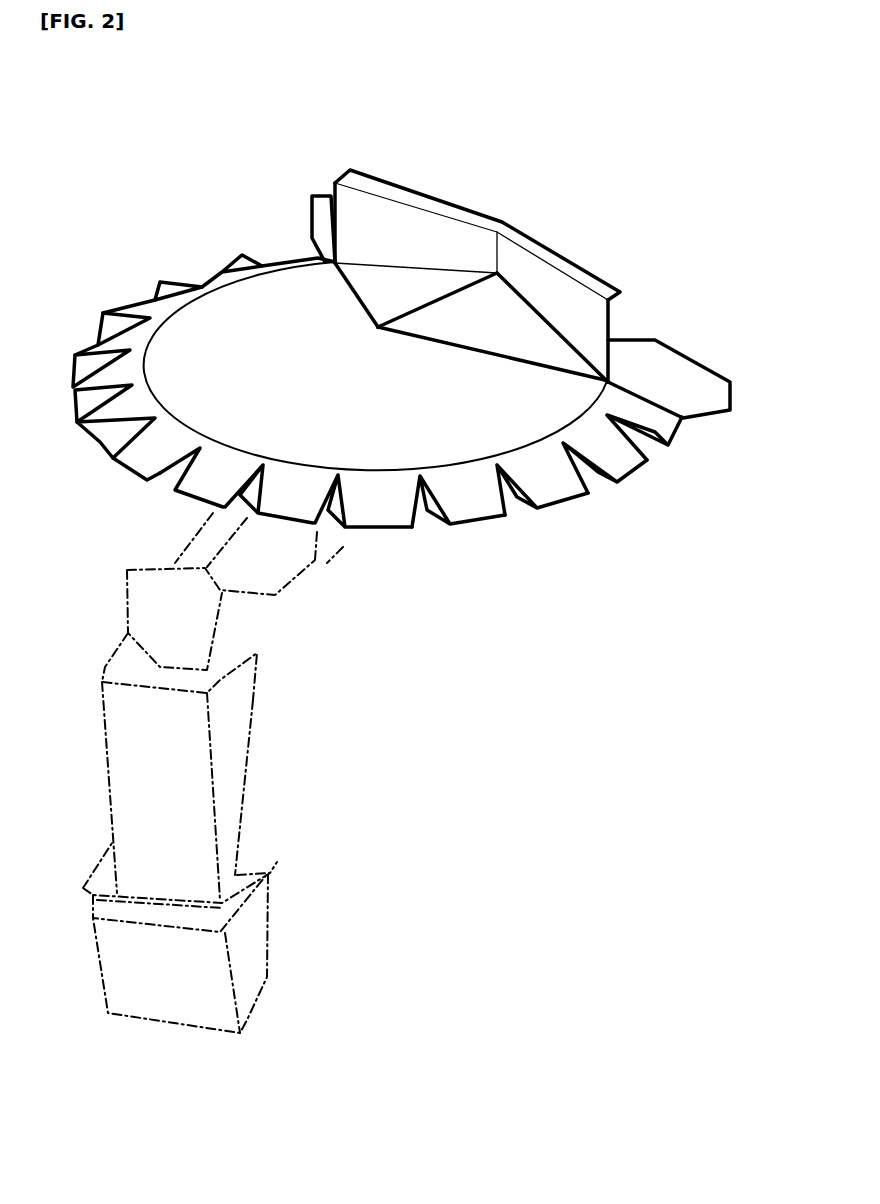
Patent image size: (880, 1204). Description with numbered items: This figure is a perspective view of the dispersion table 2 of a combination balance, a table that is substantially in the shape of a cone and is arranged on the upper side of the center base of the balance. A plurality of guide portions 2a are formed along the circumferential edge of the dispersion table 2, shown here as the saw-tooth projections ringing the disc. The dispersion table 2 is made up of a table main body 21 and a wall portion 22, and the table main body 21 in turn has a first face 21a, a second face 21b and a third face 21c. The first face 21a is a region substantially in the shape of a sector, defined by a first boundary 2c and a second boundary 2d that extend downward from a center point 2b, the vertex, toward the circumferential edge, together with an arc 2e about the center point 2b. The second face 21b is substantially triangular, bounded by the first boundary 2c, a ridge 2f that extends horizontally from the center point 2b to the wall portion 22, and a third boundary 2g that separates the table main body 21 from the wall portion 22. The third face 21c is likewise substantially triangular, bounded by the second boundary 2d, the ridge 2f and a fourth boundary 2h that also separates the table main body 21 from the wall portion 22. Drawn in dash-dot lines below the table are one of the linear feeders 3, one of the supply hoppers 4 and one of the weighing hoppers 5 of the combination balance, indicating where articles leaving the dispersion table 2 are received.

The dispersion table 2 is at (190, 173).
The guide portions 2a is at (310, 262).
The center point 2b is at (377, 330).
The first boundary 2c is at (353, 297).
The second boundary 2d is at (497, 350).
The arc 2e is at (213, 293).
The ridge 2f is at (437, 303).
The third boundary 2g is at (362, 237).
The fourth boundary 2h is at (567, 332).
The table main body 21 is at (385, 477).
The first face 21a is at (458, 433).
The second face 21b is at (410, 278).
The third face 21c is at (522, 330).
The wall portion 22 is at (590, 323).
The linear feeders 3 is at (128, 595).
The supply hoppers 4 is at (108, 770).
The weighing hoppers 5 is at (105, 978).